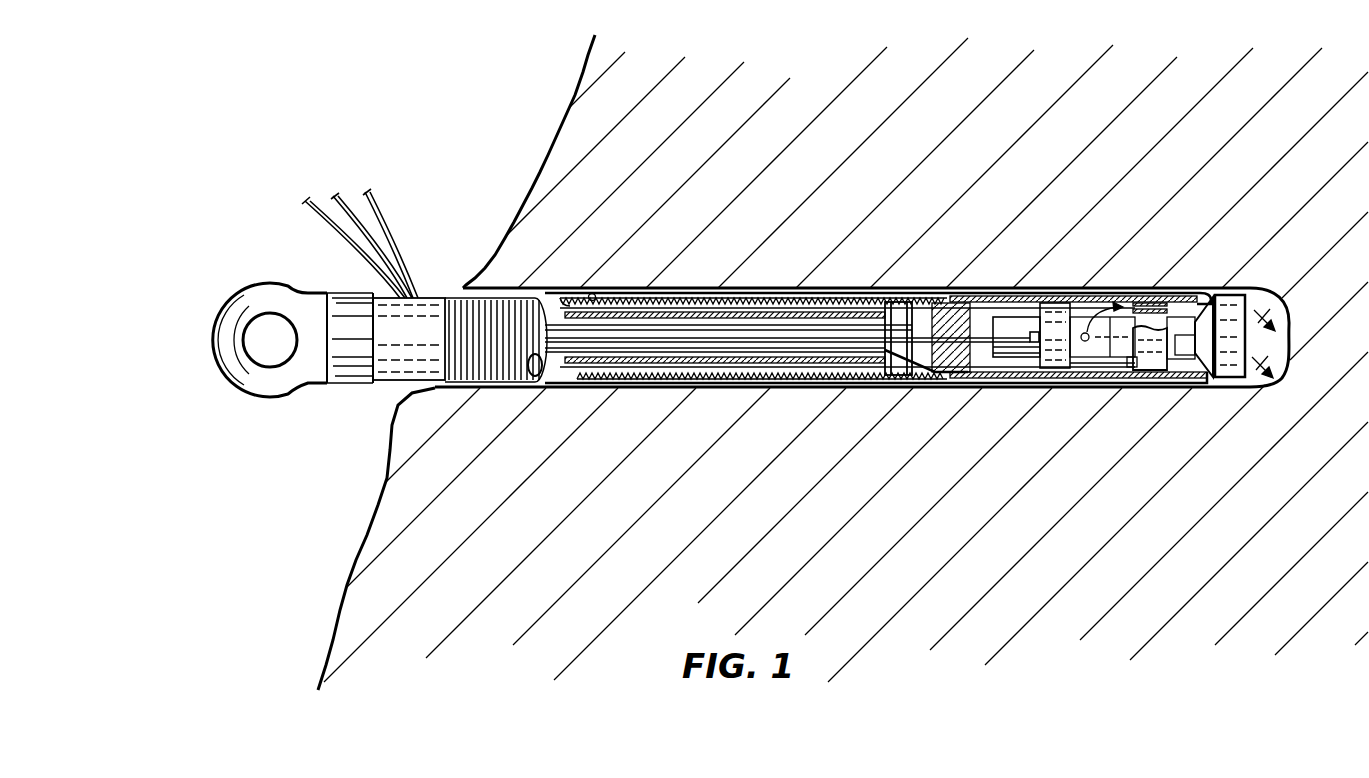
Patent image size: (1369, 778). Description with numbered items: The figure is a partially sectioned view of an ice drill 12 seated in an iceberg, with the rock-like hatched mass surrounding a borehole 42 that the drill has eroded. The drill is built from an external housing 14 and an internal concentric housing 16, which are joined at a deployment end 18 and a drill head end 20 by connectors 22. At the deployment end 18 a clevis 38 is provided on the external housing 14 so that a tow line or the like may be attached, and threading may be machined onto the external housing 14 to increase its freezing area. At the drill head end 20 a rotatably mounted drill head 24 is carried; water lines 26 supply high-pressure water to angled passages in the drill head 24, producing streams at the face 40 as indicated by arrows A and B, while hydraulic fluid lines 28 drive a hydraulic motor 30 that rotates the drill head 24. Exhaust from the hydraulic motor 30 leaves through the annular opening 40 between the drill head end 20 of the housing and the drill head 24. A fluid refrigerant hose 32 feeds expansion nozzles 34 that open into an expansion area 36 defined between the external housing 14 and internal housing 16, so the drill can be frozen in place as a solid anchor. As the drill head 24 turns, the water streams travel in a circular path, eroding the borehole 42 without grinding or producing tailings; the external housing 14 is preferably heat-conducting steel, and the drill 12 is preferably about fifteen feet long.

The ice drill 12 is at (820, 289).
The external housing 14 is at (660, 298).
The internal concentric housing 16 is at (708, 316).
The deployment end 18 is at (410, 350).
The drill head end 20 is at (1148, 378).
The connectors 22 is at (898, 366).
The drill head 24 is at (1244, 358).
The water lines 26 is at (316, 215).
The hydraulic fluid lines 28 is at (342, 200).
The hydraulic motor 30 is at (1180, 338).
The fluid refrigerant hose 32 is at (391, 246).
The expansion nozzles 34 is at (882, 304).
The expansion area 36 is at (752, 304).
The clevis 38 is at (300, 368).
The annular opening 40 is at (1208, 297).
The borehole 42 is at (594, 294).